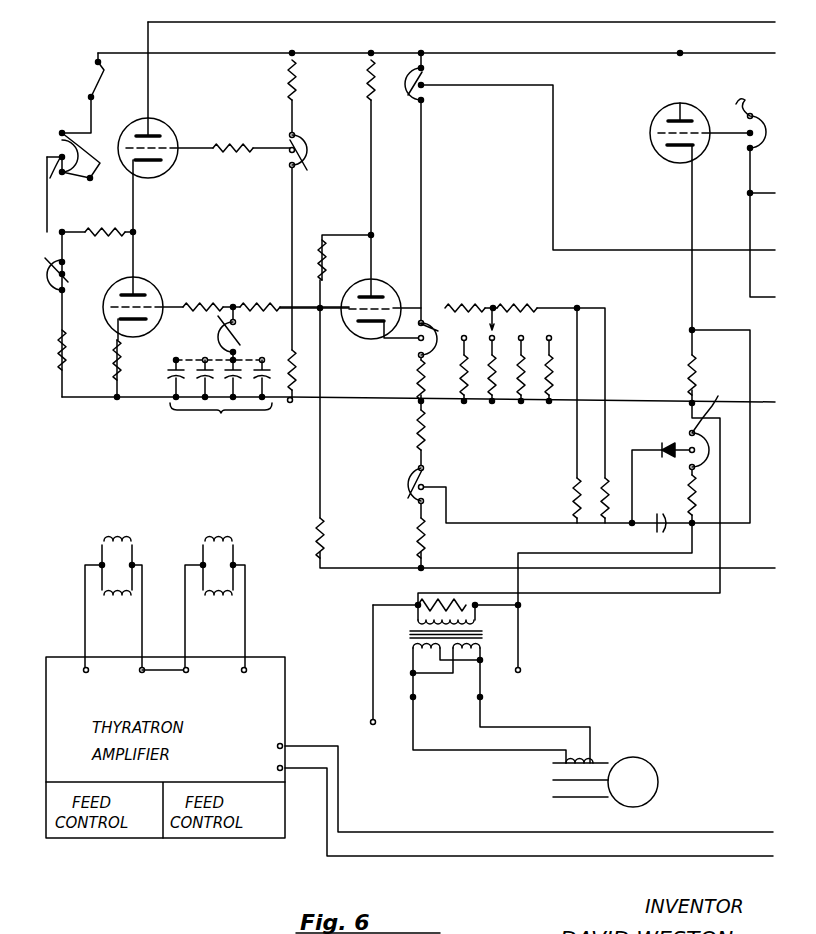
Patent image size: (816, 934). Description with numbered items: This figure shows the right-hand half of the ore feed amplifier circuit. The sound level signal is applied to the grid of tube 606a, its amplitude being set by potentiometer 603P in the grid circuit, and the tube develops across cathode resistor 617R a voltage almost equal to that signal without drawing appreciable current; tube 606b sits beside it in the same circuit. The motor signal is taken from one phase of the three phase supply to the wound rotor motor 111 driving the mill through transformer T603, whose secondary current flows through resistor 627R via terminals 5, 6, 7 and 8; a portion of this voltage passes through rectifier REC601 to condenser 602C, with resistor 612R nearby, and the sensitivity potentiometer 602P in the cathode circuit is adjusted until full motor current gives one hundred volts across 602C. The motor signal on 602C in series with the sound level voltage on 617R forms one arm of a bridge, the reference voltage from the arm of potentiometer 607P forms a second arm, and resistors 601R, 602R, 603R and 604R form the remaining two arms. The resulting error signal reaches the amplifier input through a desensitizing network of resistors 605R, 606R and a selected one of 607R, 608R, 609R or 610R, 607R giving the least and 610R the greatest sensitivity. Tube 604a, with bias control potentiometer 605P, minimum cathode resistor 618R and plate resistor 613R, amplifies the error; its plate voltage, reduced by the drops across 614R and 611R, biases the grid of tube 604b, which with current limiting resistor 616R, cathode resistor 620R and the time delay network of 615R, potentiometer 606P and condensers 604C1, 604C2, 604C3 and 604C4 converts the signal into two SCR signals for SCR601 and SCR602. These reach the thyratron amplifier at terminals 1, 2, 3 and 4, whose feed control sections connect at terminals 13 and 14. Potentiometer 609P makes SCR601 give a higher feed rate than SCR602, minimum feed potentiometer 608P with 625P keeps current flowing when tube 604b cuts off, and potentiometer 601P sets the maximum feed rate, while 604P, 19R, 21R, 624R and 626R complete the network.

The element SCR601 is at (130, 36).
The element SCR602 is at (86, 146).
The tube 606b is at (163, 127).
The tube 606a is at (652, 112).
The tube 604b is at (138, 282).
The tube 604a is at (355, 338).
The resistor 21R is at (252, 165).
The potentiometer 609P is at (77, 173).
The resistor 613R is at (366, 85).
The potentiometer 601P is at (302, 148).
The potentiometer 604P is at (428, 74).
The potentiometer 603P is at (738, 117).
The resistor 19R is at (97, 249).
The minimum feed control potentiometer 608P is at (80, 276).
The potentiometer 625P is at (80, 345).
The resistor 616R is at (208, 298).
The resistor 615R is at (293, 298).
The potentiometer 606P is at (237, 341).
The resistor 620R is at (121, 368).
The condenser 604C1 is at (220, 396).
The condenser 604C2 is at (221, 441).
The condenser 604C3 is at (219, 456).
The condenser 604C4 is at (217, 472).
The resistor 614R is at (322, 238).
The bias control potentiometer 605P is at (455, 339).
The resistor 618R is at (414, 377).
The resistor 624R is at (414, 428).
The resistor 606R is at (464, 298).
The resistor 605R is at (551, 381).
The resistor 607R is at (463, 396).
The resistor 608R is at (515, 380).
The resistor 609R is at (528, 350).
The resistor 610R is at (557, 362).
The resistor 604R is at (532, 384).
The cathode resistor 617R is at (686, 370).
The potentiometer 602P is at (717, 429).
The rectifier Rec601 REC601 is at (655, 447).
The resistor 602R is at (606, 440).
The resistor 603R is at (541, 415).
The resistor 601R is at (599, 514).
The resistor 612R is at (686, 492).
The condenser 602C is at (656, 525).
The potentiometer 607P is at (424, 472).
The resistor 626R is at (412, 535).
The resistor 611R is at (312, 536).
The resistor 627R is at (468, 601).
The transformer T603 is at (482, 634).
The terminal 1 is at (85, 683).
The terminal 2 is at (160, 683).
The terminal 3 is at (182, 683).
The terminal 4 is at (240, 683).
The terminal 5 is at (375, 724).
The terminal 6 is at (527, 674).
The terminal 7 is at (413, 697).
The terminal 8 is at (480, 697).
The terminal 13 is at (263, 771).
The terminal 14 is at (263, 747).
The wound rotor motor 111 is at (658, 758).